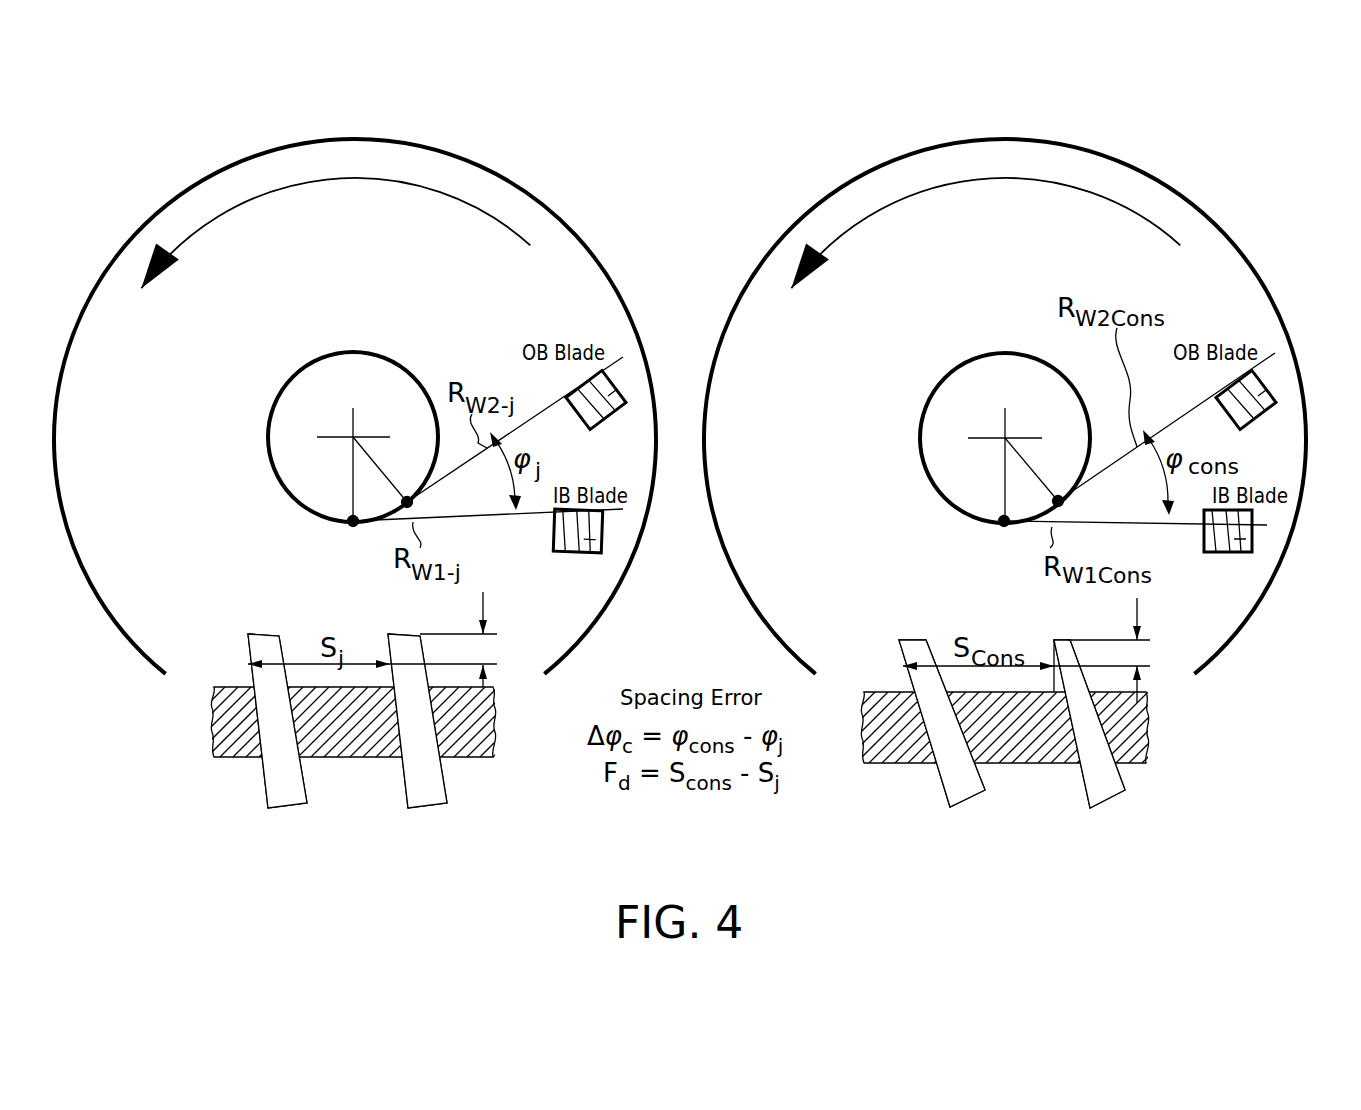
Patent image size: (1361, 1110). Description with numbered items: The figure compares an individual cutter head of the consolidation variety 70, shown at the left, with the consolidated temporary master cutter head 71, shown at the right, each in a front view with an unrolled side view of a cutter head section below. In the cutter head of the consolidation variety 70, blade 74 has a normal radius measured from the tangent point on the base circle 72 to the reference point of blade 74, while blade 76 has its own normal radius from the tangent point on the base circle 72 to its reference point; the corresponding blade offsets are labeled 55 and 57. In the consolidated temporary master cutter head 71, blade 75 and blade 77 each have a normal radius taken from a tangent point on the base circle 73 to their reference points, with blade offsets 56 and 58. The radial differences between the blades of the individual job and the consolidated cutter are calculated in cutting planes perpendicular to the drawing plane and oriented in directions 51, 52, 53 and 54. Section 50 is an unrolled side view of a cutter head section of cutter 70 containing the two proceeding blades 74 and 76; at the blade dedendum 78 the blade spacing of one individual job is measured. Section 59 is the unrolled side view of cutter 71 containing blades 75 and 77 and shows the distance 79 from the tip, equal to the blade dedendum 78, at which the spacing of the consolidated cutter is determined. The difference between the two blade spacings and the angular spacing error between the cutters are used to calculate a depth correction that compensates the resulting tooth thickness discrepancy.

The unrolled side view of cutter head section 50 is at (477, 747).
The cutting plane direction 51 is at (618, 356).
The cutting plane direction 52 is at (1272, 354).
The cutting plane direction 53 is at (618, 509).
The cutting plane direction 54 is at (1258, 527).
The blade offset 55 is at (377, 465).
The blade offset 56 is at (1030, 465).
The blade offset 57 is at (352, 482).
The blade offset 58 is at (1003, 482).
The unrolled side view of cutter head section 59 is at (1132, 745).
The cutter head of the consolidation variety 70 is at (500, 175).
The consolidated temporary master cutter head 71 is at (1180, 190).
The base circle 72 is at (270, 422).
The base circle 73 is at (921, 423).
The blade 74 is at (612, 387).
The blade 75 is at (1253, 393).
The blade 76 is at (603, 540).
The blade 77 is at (1253, 540).
The blade dedendum 78 is at (461, 639).
The distance from the tip 79 is at (1137, 653).